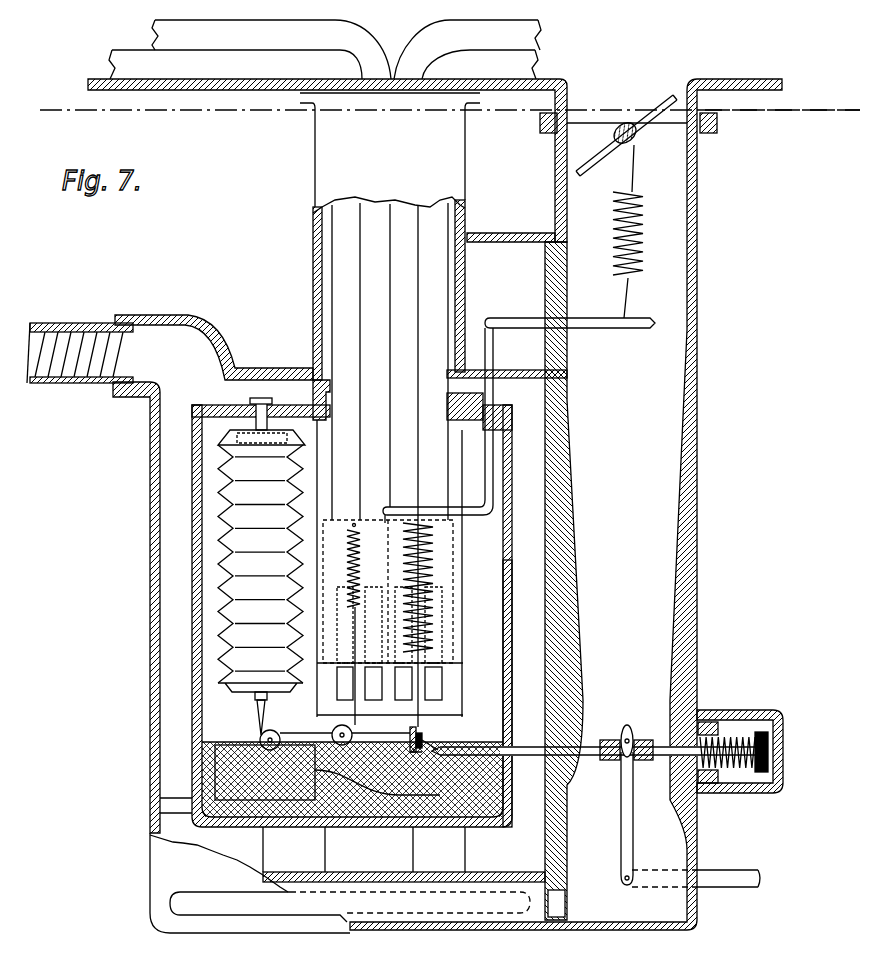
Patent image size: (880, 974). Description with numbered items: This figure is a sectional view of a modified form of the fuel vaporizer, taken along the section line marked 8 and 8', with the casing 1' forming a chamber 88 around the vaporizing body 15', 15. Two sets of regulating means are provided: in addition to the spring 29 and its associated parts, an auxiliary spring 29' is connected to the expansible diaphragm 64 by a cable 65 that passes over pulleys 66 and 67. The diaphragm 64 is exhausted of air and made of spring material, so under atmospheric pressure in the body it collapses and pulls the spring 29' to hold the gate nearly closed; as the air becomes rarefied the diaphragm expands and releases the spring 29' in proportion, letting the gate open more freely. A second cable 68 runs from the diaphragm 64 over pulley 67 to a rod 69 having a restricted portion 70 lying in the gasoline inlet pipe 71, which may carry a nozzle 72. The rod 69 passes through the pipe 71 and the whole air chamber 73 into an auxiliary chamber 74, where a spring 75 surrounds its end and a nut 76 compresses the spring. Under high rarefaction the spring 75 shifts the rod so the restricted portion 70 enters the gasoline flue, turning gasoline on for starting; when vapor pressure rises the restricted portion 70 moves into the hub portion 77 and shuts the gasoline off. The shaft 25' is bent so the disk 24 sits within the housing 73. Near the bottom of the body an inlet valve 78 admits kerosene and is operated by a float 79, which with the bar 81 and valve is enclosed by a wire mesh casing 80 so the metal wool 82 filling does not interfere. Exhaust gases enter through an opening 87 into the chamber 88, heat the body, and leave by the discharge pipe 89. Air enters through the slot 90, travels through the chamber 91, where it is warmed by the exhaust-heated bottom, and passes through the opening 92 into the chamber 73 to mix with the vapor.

The casing 1' is at (435, 506).
The section line 8 is at (440, 107).
The section line 8' is at (780, 108).
The body 15 is at (522, 693).
The body 15' is at (574, 581).
The disk 24 is at (628, 327).
The shaft 25' is at (455, 425).
The spring 29 is at (404, 623).
The auxiliary spring 29' is at (422, 625).
The expansible diaphragm 64 is at (240, 607).
The cable 65 is at (352, 735).
The pulley 66 is at (322, 730).
The pulley 67 is at (272, 733).
The cable 68 is at (433, 750).
The rod 69 is at (593, 770).
The restricted portion 70 is at (636, 732).
The gasoline inlet pipe 71 is at (633, 806).
The nozzle 72 is at (626, 725).
The chamber 73 is at (627, 377).
The auxiliary chamber 74 is at (728, 793).
The spring 75 is at (745, 770).
The nut 76 is at (764, 773).
The hub portion 77 is at (650, 760).
The inlet valve 78 is at (478, 830).
The float 79 is at (195, 772).
The wire mesh casing 80 is at (212, 745).
The bar 81 is at (310, 827).
The metal wool 82 is at (215, 827).
The opening 87 is at (369, 849).
The chamber 88 is at (404, 866).
The discharge pipe 89 is at (85, 372).
The slot or opening 90 is at (277, 915).
The chamber 91 is at (500, 913).
The opening 92 is at (558, 918).